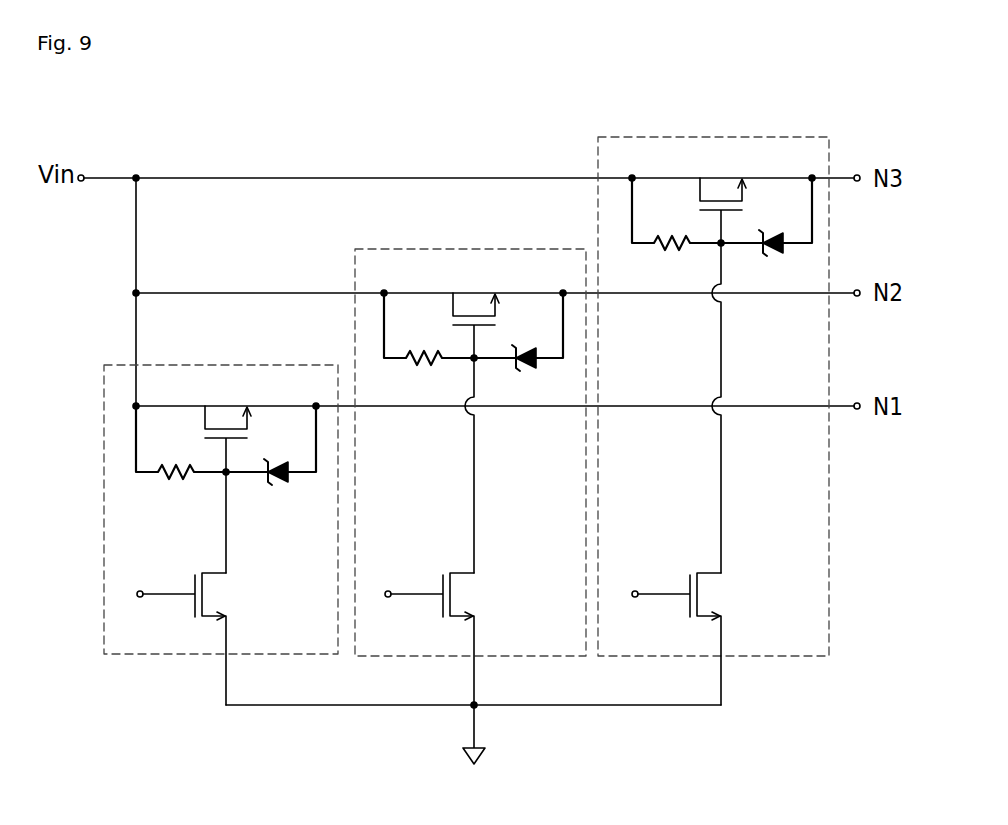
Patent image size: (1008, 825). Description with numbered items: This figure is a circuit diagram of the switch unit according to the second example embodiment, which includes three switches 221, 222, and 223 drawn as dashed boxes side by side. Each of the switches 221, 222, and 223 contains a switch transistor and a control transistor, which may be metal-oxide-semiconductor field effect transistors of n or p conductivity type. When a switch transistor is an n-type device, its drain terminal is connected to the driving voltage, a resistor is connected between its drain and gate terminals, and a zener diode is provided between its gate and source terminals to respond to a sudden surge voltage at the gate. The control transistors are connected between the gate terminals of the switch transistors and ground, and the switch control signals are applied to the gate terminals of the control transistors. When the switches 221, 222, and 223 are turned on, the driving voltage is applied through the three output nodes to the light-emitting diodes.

The switch 221 is at (220, 364).
The switch 222 is at (470, 248).
The switch 223 is at (713, 135).